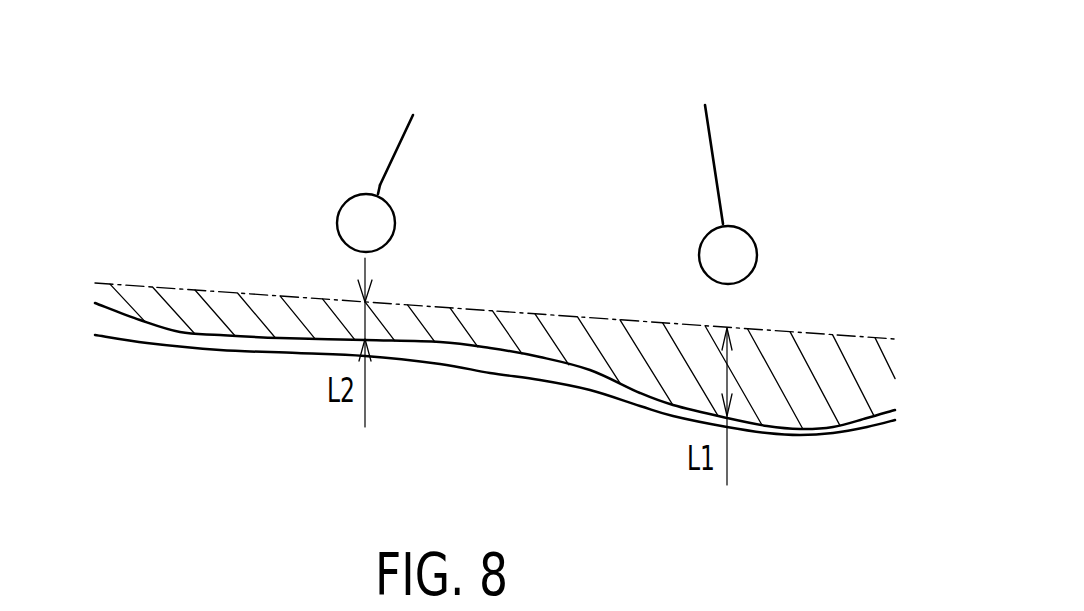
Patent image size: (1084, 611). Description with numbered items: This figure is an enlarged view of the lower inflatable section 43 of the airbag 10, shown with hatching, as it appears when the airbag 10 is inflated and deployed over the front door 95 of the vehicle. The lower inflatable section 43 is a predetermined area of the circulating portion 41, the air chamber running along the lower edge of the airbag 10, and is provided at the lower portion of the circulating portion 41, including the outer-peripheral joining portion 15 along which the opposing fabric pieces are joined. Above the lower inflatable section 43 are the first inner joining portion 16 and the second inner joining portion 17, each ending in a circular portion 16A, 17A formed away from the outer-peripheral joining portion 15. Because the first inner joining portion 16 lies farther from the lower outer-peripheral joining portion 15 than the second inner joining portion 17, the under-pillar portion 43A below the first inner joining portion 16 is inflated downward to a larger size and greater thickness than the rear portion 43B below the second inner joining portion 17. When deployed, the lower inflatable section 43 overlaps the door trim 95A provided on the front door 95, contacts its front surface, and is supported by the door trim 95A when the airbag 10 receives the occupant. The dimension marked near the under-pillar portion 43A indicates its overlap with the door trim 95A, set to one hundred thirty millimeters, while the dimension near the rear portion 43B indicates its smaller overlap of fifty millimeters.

The airbag 10 is at (298, 352).
The outer-peripheral joining portion 15 is at (225, 340).
The first inner joining portion 16 is at (715, 162).
The circular portion of first inner joining portion 16A is at (757, 250).
The second inner joining portion 17 is at (397, 153).
The circular portion of second inner joining portion 17A is at (393, 227).
The circulating portion 41 is at (593, 308).
The lower inflatable section 43 is at (653, 373).
The under-pillar portion 43A is at (760, 400).
The rear portion 43B is at (410, 337).
The front door 95 is at (520, 412).
The door trim 95A is at (605, 402).